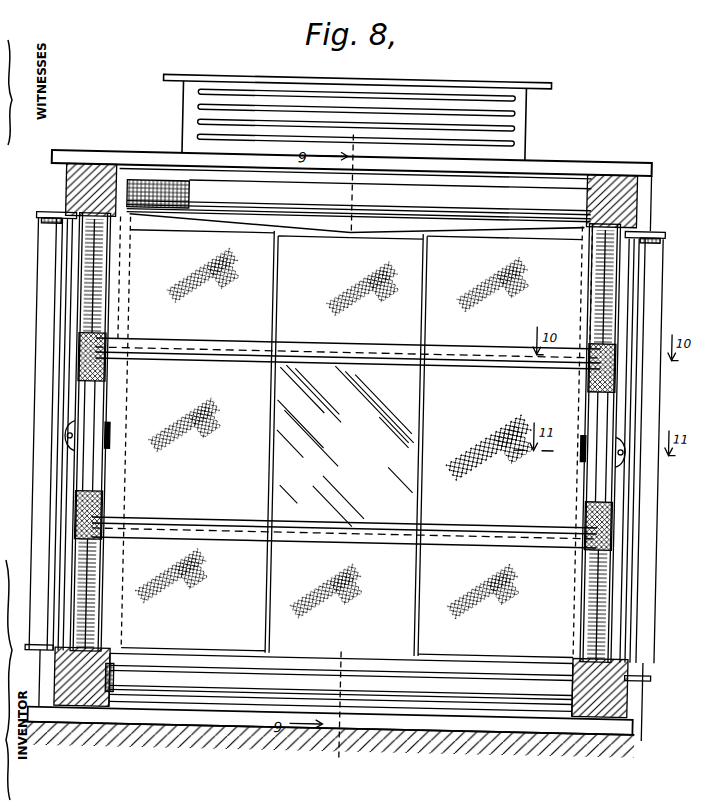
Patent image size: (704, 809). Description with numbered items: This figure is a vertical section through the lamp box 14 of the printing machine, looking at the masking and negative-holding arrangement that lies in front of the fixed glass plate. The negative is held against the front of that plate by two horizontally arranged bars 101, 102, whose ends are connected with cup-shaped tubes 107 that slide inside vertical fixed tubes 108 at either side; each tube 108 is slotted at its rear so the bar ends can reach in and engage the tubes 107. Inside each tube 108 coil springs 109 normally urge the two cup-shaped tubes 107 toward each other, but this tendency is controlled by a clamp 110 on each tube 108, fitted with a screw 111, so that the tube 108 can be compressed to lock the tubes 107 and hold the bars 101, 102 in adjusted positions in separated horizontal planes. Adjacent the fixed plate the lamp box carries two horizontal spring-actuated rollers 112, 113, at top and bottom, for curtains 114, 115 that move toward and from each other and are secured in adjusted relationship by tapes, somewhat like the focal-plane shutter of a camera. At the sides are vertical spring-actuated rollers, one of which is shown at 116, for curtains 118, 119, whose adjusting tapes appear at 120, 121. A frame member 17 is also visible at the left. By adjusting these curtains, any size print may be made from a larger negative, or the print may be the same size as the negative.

The lamp box 14 is at (86, 150).
The left frame member 17 is at (42, 468).
The horizontally arranged bar 101 is at (348, 343).
The horizontally arranged bar 102 is at (313, 538).
The cup-shaped tube 107 is at (106, 372).
The vertical fixed tube 108 is at (112, 268).
The coil spring 109 is at (100, 300).
The clamp 110 is at (116, 446).
The screw 111 is at (70, 446).
The horizontal spring actuated roller 112 is at (354, 202).
The horizontal spring actuated roller 113 is at (339, 684).
The curtain 114 is at (176, 220).
The curtain 115 is at (163, 650).
The vertical spring actuated roller 116 is at (640, 528).
The curtain 118 is at (434, 443).
The curtain 119 is at (188, 438).
The adjusting tape 120 is at (381, 233).
The adjusting tape 121 is at (296, 233).